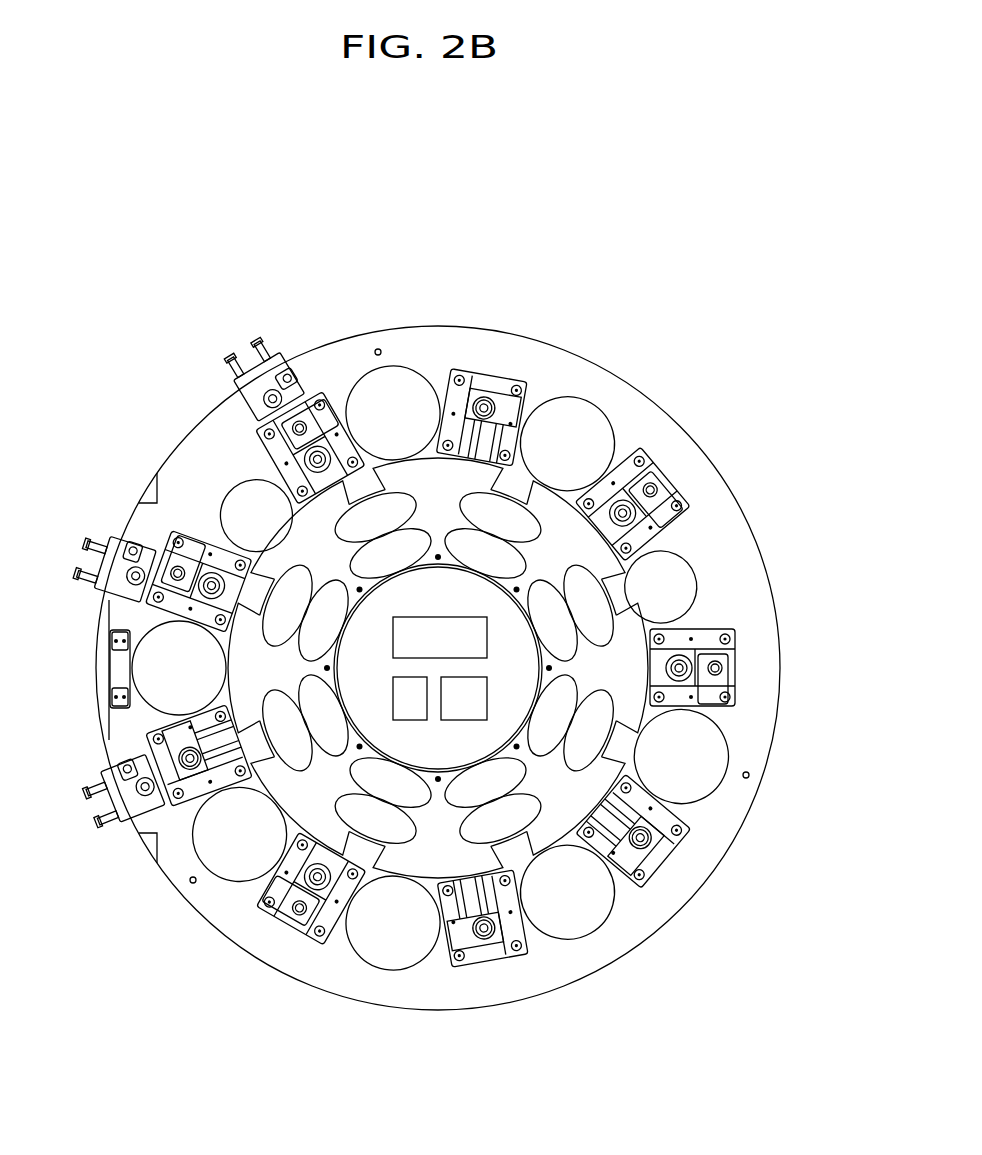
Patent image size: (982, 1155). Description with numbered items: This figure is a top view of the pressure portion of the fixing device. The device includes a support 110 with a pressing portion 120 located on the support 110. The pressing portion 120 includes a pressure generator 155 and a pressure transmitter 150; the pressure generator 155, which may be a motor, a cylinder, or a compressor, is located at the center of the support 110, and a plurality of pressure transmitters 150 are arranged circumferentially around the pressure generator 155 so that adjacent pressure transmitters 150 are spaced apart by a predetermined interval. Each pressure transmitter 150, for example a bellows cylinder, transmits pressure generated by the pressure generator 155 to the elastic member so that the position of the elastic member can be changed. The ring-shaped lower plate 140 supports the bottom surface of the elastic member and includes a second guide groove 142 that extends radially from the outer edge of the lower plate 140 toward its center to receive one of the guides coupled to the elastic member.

The support 110 is at (716, 878).
The pressing portion 120 is at (592, 666).
The lower plate 140 is at (557, 830).
The second guide groove 142 is at (622, 745).
The pressure transmitter 150 is at (512, 507).
The pressure generator 155 is at (362, 660).